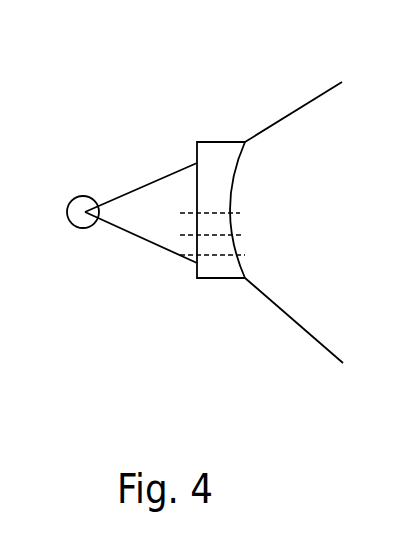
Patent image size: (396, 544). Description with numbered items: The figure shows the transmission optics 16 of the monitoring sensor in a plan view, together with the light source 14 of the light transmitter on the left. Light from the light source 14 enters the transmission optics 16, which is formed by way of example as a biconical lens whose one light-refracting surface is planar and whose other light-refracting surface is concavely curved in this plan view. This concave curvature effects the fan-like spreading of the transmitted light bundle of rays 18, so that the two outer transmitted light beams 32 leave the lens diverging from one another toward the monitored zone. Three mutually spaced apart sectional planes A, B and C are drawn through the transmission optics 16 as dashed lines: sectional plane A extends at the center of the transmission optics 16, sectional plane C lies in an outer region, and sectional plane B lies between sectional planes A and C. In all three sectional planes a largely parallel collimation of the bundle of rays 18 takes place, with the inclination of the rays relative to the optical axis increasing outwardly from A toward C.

The light source 14 is at (76, 217).
The transmission optics 16 is at (212, 157).
The transmitted light bundle of rays 18 is at (287, 150).
The outer transmitted light beams 32 is at (325, 88).
The sectional plane A is at (240, 213).
The sectional plane B is at (243, 237).
The sectional plane C is at (247, 257).